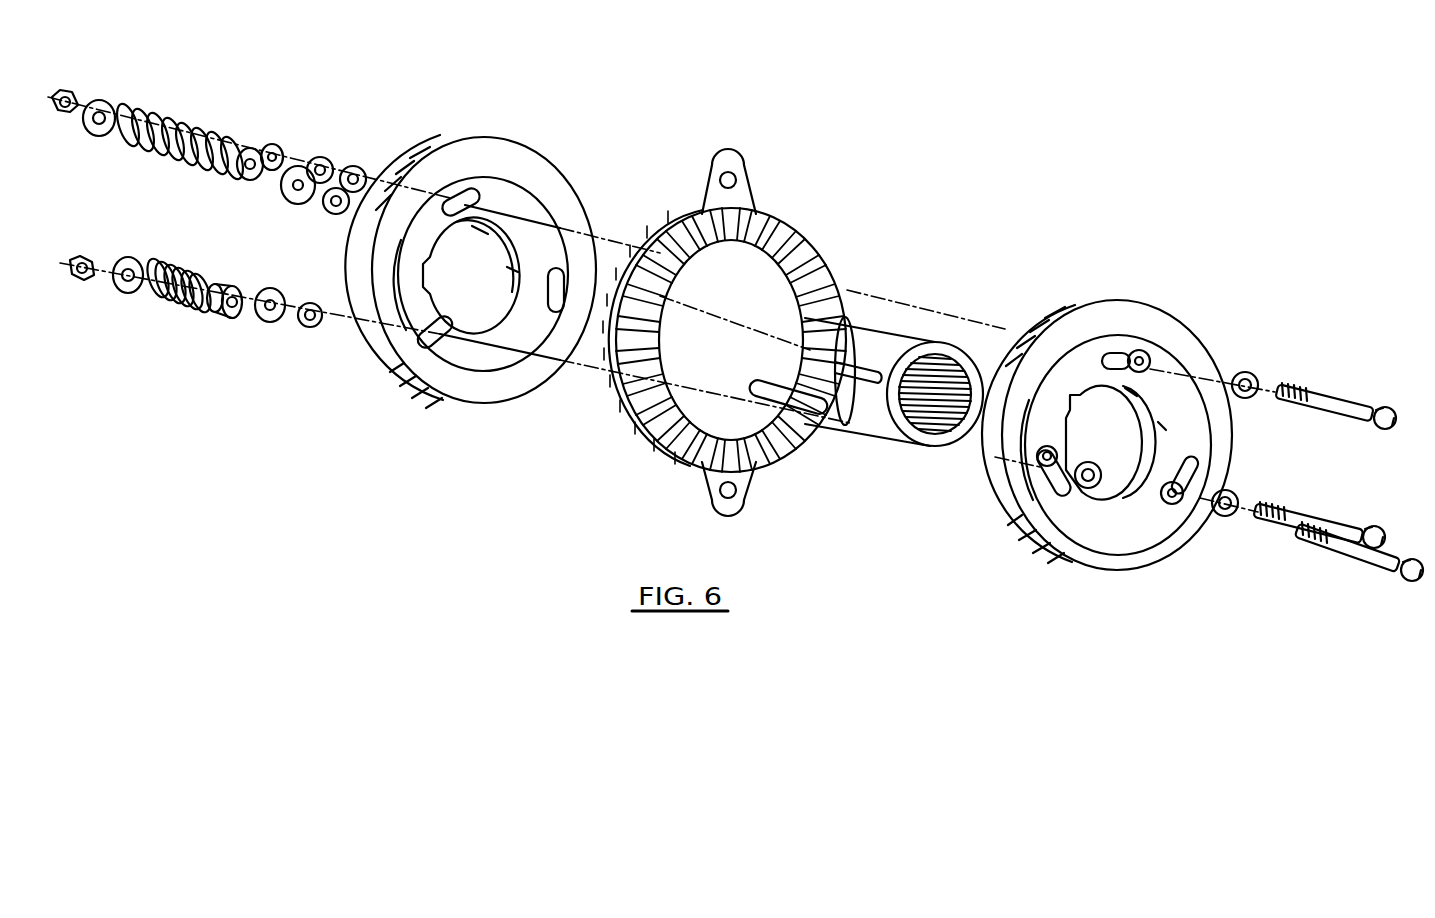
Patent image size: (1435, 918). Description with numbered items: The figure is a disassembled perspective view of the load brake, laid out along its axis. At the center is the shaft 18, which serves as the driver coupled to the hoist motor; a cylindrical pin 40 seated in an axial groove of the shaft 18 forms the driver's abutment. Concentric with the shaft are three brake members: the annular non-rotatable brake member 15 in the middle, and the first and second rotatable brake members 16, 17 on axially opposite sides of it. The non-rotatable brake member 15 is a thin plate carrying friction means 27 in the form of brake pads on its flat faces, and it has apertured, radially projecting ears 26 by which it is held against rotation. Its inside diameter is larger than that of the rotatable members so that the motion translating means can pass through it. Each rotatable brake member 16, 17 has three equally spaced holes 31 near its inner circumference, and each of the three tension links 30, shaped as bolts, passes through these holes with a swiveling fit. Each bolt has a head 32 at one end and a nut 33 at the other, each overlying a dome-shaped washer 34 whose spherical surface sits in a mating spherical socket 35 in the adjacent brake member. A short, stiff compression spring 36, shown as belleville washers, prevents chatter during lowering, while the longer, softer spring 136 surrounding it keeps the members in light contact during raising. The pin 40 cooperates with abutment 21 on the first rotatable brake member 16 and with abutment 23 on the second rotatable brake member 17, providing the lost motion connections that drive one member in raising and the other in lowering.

The annular non-rotatable brake member 15 is at (792, 210).
The first rotatable brake member 16 is at (552, 160).
The second rotatable brake member 17 is at (1142, 302).
The shaft 18 is at (906, 325).
The abutment 21 is at (432, 294).
The abutment 23 is at (1080, 404).
The ears 26 is at (743, 168).
The friction means 27 is at (668, 218).
The tension links 30 is at (1350, 408).
The holes 31 is at (470, 192).
The head 32 is at (1387, 428).
The nut 33 is at (68, 95).
The dome-shaped washer 34 is at (340, 168).
The spherical socket 35 is at (1151, 359).
The compression spring 36 is at (252, 150).
The pin 40 is at (750, 382).
The spring 136 is at (208, 130).